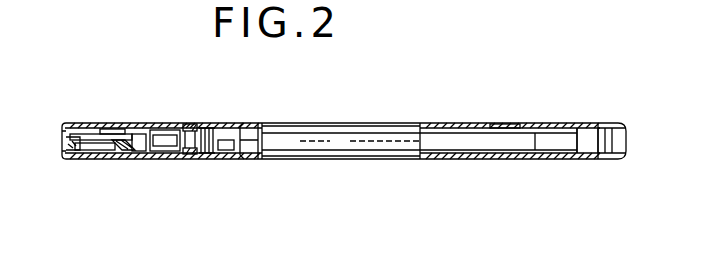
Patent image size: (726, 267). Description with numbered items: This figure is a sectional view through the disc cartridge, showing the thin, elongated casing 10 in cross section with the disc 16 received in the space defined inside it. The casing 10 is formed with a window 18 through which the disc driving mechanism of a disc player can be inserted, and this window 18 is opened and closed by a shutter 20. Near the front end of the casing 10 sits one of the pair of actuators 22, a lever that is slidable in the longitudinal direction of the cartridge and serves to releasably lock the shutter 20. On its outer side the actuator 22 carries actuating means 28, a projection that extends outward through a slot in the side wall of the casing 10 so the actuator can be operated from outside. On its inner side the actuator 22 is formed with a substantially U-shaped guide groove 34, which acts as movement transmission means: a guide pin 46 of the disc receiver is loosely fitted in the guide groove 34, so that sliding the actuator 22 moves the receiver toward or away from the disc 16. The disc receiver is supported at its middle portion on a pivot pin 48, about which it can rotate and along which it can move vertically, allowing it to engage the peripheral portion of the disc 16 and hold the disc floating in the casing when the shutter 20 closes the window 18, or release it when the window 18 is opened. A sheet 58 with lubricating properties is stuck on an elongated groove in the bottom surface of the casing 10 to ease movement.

The casing 10 is at (638, 109).
The disc 16 is at (375, 152).
The window 18 is at (355, 123).
The shutter 20 is at (405, 123).
The actuator 22 is at (126, 160).
The actuating means 28 is at (41, 144).
The guide groove 34 is at (100, 122).
The guide pin 46 is at (130, 125).
The pivot pin 48 is at (215, 122).
The sheet 58 is at (508, 122).